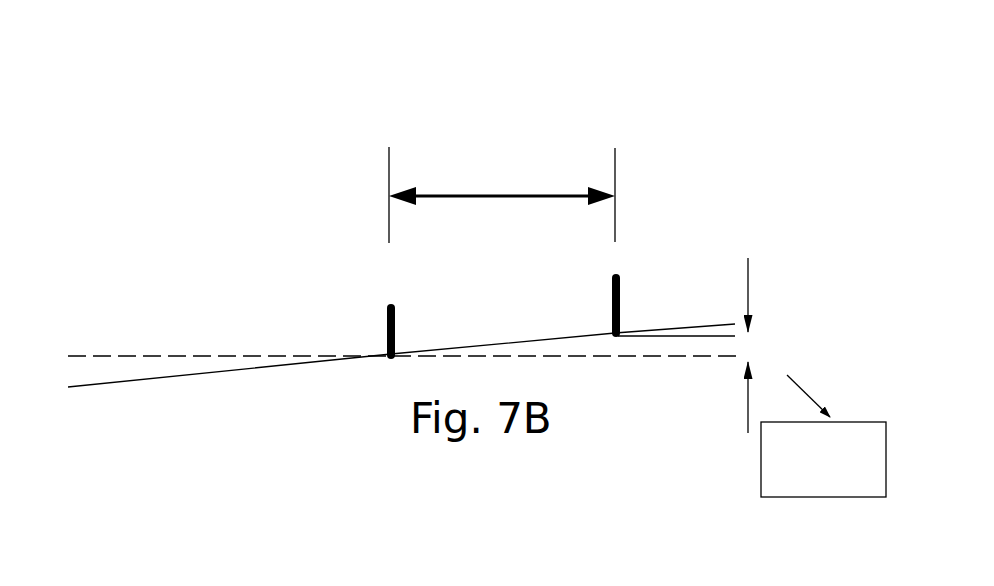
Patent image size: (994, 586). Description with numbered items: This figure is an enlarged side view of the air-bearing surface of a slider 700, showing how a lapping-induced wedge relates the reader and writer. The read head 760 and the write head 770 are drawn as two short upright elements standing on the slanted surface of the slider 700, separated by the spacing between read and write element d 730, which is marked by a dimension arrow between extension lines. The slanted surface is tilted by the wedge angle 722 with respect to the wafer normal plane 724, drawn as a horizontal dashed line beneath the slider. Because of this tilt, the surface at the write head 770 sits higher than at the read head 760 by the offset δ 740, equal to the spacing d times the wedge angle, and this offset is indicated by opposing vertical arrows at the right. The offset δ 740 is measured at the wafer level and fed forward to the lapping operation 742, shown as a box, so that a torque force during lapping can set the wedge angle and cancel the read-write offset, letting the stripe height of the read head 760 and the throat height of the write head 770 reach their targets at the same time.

The slider 700 is at (170, 153).
The wafer normal plane 724 is at (153, 356).
The spacing between read and write element d 730 is at (538, 127).
The read head 760 is at (358, 290).
The write head 770 is at (632, 285).
The wedge angle (Δ/L) 722 is at (720, 323).
The offset δ 740 is at (797, 352).
The lapping operation 742 is at (762, 459).